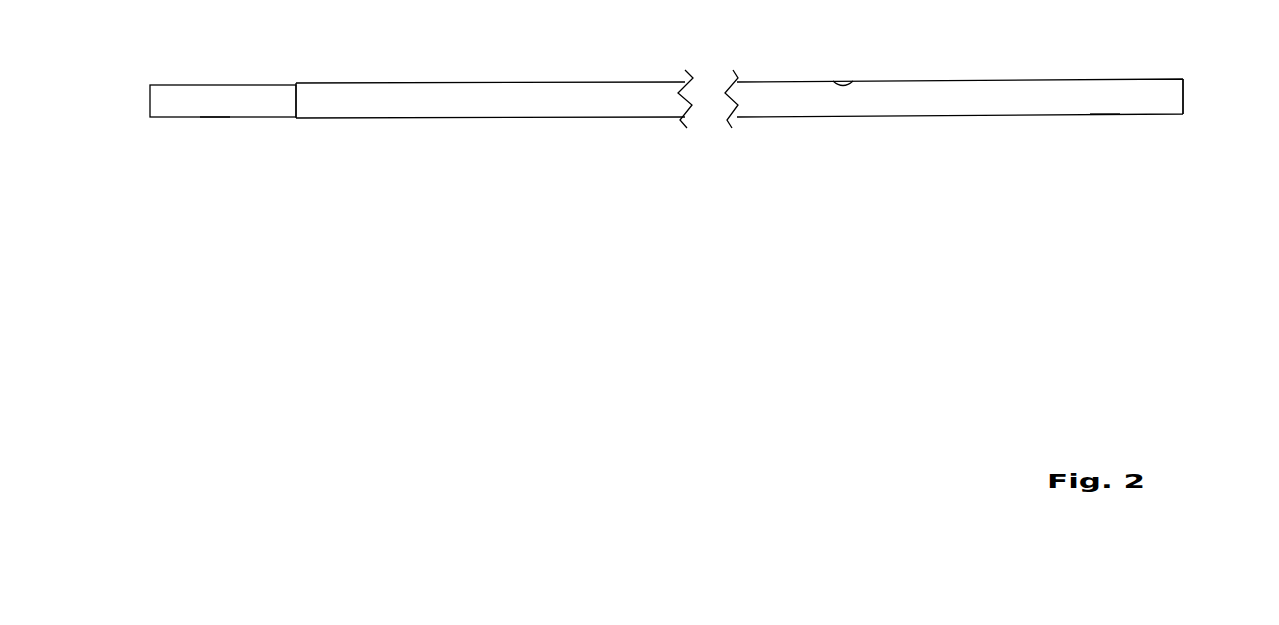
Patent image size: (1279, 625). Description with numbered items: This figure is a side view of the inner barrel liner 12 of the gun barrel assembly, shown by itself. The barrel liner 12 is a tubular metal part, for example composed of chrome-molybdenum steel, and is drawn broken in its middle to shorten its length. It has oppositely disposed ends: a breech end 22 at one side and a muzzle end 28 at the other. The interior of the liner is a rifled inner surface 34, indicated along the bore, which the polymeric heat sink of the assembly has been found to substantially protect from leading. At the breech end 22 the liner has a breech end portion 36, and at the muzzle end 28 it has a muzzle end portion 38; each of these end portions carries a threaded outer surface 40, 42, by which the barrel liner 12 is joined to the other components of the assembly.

The inner barrel liner 12 is at (503, 207).
The breech end 22 is at (150, 104).
The muzzle end 28 is at (1183, 96).
The rifled inner surface 34 is at (853, 80).
The breech end portion 36 is at (254, 52).
The muzzle end portion 38 is at (1152, 46).
The threaded outer surface 40 is at (215, 117).
The threaded outer surface 42 is at (1105, 114).